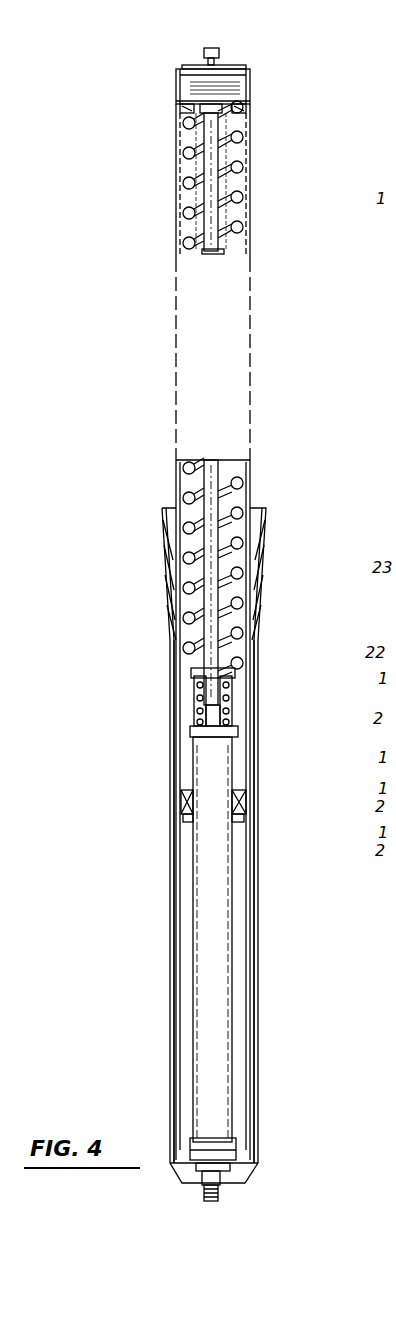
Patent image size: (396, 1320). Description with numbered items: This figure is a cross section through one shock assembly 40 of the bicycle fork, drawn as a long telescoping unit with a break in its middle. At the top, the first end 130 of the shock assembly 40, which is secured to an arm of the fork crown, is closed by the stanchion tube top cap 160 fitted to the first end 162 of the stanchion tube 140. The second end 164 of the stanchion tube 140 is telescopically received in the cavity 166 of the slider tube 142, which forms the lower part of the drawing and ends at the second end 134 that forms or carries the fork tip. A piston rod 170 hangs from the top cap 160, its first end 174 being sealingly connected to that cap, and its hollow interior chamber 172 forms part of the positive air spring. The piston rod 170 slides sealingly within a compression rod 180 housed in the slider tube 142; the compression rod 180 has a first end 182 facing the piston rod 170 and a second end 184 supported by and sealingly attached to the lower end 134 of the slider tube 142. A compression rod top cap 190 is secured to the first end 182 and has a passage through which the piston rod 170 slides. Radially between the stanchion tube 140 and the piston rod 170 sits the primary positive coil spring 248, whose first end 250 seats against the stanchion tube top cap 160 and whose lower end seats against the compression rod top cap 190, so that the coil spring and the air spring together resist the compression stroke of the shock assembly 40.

The shock assembly 40 is at (286, 490).
The first end 130 is at (285, 56).
The second end 134 is at (272, 1172).
The stanchion tube 140 is at (250, 154).
The slider tube 142 is at (258, 920).
The stanchion tube top cap 160 is at (233, 62).
The first end of stanchion tube 162 is at (176, 92).
The second end of stanchion tube 164 is at (250, 810).
The cavity 166 is at (244, 990).
The piston rod 170 is at (222, 224).
The hollow interior chamber 172 is at (214, 242).
The first end of piston rod 174 is at (200, 137).
The compression rod 180 is at (196, 946).
The first end of compression rod 182 is at (194, 692).
The second end of compression rod 184 is at (238, 1156).
The compression rod top cap 190 is at (194, 674).
The primary positive coil spring 248 is at (182, 183).
The first end of primary coil spring 250 is at (236, 108).